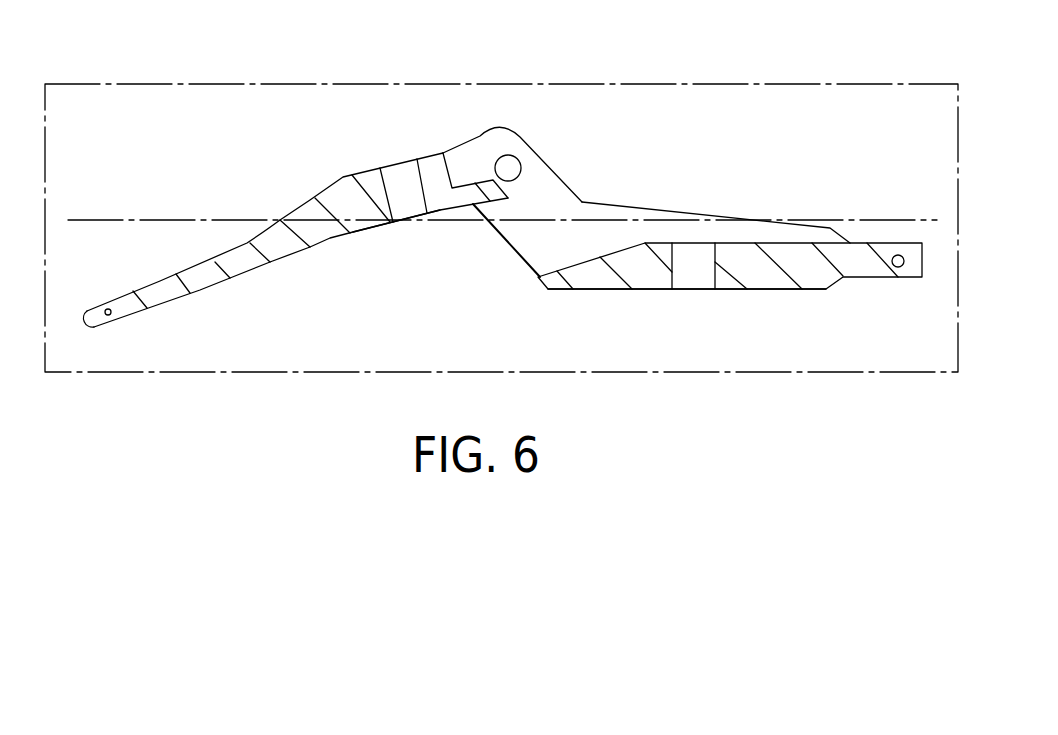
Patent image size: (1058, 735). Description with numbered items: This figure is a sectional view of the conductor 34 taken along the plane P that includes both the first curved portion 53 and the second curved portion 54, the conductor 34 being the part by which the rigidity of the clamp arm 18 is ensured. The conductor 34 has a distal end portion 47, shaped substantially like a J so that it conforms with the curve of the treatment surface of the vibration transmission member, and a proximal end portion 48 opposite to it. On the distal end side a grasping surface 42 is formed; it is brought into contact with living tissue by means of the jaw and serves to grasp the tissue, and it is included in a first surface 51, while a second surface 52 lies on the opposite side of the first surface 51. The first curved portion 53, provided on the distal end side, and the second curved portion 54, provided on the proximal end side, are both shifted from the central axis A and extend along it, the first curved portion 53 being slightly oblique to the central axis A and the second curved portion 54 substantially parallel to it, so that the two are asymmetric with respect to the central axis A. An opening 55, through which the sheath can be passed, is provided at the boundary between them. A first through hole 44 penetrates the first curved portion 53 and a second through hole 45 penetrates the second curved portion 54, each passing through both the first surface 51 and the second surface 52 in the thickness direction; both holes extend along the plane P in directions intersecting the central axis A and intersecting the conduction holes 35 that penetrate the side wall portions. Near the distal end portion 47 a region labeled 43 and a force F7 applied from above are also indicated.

The clamp arm 18 is at (592, 155).
The conductor 34 is at (480, 130).
The conduction holes 35 is at (520, 157).
The grasping surface 42 is at (182, 304).
The arm end portion 43 is at (127, 293).
The first through hole 44 is at (395, 170).
The second through hole 45 is at (691, 278).
The distal end portion 47 is at (81, 322).
The proximal end portion 48 is at (923, 265).
The first surface 51 is at (378, 228).
The second surface 52 is at (352, 174).
The first curved portion 53 is at (432, 151).
The second curved portion 54 is at (644, 291).
The opening 55 is at (520, 249).
The central axis A is at (903, 219).
The plane P is at (943, 84).
The force F7 is at (510, 100).